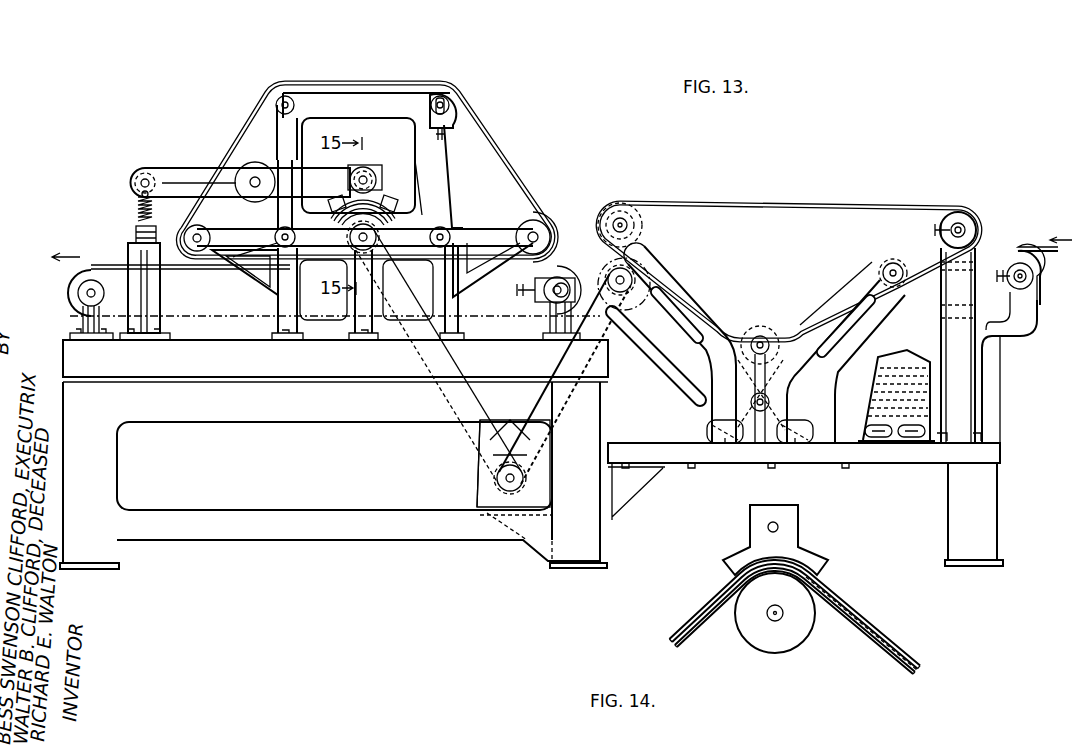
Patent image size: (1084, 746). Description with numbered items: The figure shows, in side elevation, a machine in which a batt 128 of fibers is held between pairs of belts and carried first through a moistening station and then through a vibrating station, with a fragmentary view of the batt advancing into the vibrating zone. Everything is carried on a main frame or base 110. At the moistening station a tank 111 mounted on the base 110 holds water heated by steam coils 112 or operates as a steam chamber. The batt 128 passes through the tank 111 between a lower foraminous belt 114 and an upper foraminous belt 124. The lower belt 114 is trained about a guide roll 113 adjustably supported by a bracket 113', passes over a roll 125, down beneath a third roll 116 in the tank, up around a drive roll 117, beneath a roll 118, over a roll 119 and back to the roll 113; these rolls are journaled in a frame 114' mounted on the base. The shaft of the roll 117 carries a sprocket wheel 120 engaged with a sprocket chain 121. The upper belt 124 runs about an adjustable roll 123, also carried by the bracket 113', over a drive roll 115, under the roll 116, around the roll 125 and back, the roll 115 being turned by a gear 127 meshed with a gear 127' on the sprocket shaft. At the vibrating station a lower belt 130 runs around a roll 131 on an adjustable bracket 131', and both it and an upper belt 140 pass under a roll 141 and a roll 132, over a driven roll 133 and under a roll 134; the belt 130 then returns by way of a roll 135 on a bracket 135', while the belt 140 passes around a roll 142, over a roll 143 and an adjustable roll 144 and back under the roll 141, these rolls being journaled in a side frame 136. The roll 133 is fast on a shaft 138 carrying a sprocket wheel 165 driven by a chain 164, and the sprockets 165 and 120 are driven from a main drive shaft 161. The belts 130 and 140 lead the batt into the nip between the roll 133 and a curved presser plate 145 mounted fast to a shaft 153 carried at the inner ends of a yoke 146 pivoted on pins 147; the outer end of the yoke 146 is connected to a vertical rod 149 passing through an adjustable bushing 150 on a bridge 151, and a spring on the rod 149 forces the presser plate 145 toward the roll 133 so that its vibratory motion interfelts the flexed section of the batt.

In FIG. 13, the main frame or base 110 is at (586, 546).
In FIG. 13, the tank 111 is at (855, 432).
In FIG. 13, the steam coils 112 is at (910, 440).
In FIG. 13, the guide roll 113 is at (1030, 292).
In FIG. 13, the bracket 113' is at (1025, 367).
In FIG. 13, the lower belt 114 is at (862, 351).
In FIG. 13, the frame 114' is at (677, 339).
In FIG. 13, the roll 115 is at (645, 210).
In FIG. 13, the third roll 116 is at (771, 330).
In FIG. 13, the roll 117 is at (616, 293).
In FIG. 13, the roll 118 is at (792, 445).
In FIG. 13, the roll 119 is at (906, 362).
In FIG. 13, the sprocket wheel 120 is at (621, 346).
In FIG. 13, the sprocket chain 121 is at (566, 410).
In FIG. 13, the adjustable roll 123 is at (958, 225).
In FIG. 13, the upper belt 124 is at (912, 256).
In FIG. 13, the roll 125 is at (872, 262).
In FIG. 13, the gear 127 is at (620, 207).
In FIG. 13, the gear 127' is at (615, 272).
In FIG. 13, the batt 128 is at (1000, 249).
In FIG. 13, the lower belt 130 is at (561, 230).
In FIG. 14, the lower belt 130 is at (903, 668).
In FIG. 13, the roll 131 is at (542, 302).
In FIG. 13, the adjustable bracket 131' is at (535, 296).
In FIG. 13, the roll 132 is at (462, 222).
In FIG. 13, the driven roll 133 is at (373, 215).
In FIG. 14, the driven roll 133 is at (790, 640).
In FIG. 13, the roll 134 is at (366, 290).
In FIG. 13, the roll 135 is at (153, 291).
In FIG. 13, the bracket 135' is at (64, 323).
In FIG. 13, the side frame 136 is at (395, 105).
In FIG. 13, the shaft 138 is at (356, 248).
In FIG. 13, the upper belt 140 is at (499, 150).
In FIG. 14, the upper belt 140 is at (914, 654).
In FIG. 13, the roll 141 is at (526, 221).
In FIG. 13, the roll 142 is at (190, 229).
In FIG. 13, the roll 143 is at (279, 92).
In FIG. 13, the adjustable roll 144 is at (450, 88).
In FIG. 13, the curved presser plate 145 is at (380, 172).
In FIG. 14, the curved presser plate 145 is at (808, 558).
In FIG. 13, the yoke 146 is at (266, 168).
In FIG. 13, the pins 147 is at (257, 193).
In FIG. 13, the vertical rod 149 is at (137, 205).
In FIG. 13, the adjustable bushing 150 is at (133, 230).
In FIG. 13, the bridge 151 is at (126, 250).
In FIG. 14, the shaft 153 is at (768, 527).
In FIG. 13, the main drive shaft 161 is at (499, 481).
In FIG. 13, the chain 164 is at (428, 356).
In FIG. 13, the sprocket wheel 165 is at (382, 248).